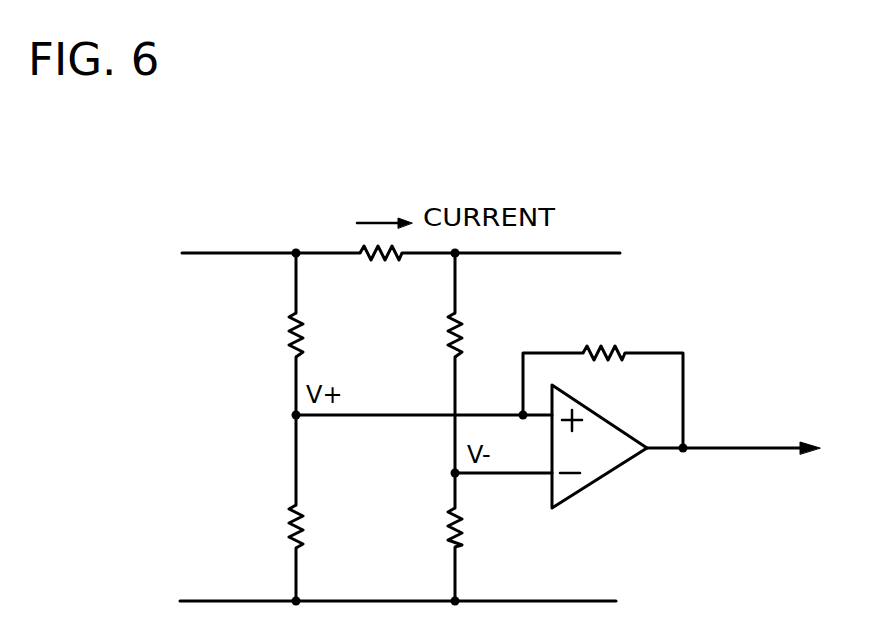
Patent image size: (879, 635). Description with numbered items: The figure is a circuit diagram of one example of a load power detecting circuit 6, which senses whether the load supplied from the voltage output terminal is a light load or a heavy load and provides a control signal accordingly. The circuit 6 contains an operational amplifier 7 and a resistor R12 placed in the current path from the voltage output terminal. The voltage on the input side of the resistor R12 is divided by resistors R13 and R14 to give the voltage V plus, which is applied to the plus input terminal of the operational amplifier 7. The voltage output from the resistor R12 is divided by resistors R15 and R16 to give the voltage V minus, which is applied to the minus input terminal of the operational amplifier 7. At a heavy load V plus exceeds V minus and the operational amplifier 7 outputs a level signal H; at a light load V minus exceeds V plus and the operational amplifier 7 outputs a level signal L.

The load power detecting circuit 6 is at (727, 306).
The operational amplifier 7 is at (597, 481).
The resistor R12 is at (378, 268).
The resistor R13 is at (322, 335).
The resistor R14 is at (322, 526).
The resistor R15 is at (482, 335).
The resistor R16 is at (482, 527).